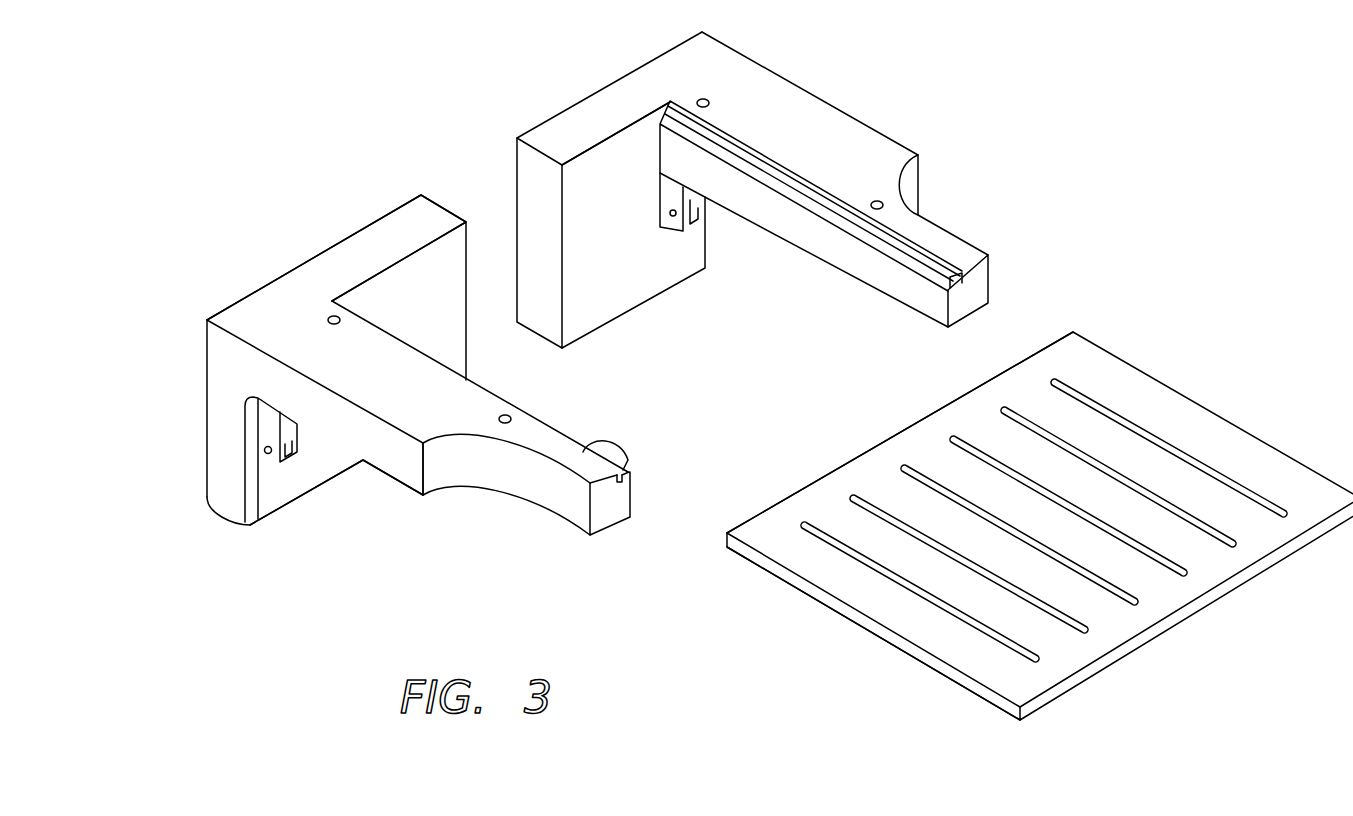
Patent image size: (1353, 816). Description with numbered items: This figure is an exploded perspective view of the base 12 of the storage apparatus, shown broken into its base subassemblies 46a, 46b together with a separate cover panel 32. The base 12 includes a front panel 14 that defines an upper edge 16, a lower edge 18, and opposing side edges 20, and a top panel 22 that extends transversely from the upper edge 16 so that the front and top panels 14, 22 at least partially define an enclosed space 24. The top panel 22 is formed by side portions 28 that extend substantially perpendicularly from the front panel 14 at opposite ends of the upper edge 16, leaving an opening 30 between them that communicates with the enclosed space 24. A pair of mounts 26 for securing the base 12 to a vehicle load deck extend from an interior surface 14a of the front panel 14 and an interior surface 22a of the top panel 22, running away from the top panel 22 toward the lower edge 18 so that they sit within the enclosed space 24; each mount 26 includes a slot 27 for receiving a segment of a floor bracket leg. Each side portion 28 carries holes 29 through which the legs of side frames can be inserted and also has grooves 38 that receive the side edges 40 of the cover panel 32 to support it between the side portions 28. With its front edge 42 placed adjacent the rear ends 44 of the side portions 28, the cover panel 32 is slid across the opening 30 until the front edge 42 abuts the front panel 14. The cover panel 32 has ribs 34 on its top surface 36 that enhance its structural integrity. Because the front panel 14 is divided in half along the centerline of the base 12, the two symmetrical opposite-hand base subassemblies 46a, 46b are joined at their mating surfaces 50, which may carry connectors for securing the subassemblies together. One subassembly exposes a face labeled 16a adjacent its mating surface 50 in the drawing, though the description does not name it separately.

The base 12 is at (738, 383).
The front panel 14 is at (624, 320).
The interior surface of the front panel 14a is at (320, 467).
The upper edge 16 is at (255, 305).
The side face of second bracket block 16a is at (622, 285).
The lower edge 18 is at (297, 505).
The side edges 20 is at (220, 397).
The top panel 22 is at (787, 100).
The interior surface of the top panel 22a is at (266, 443).
The enclosed space 24 is at (373, 520).
The mounts 26 is at (268, 440).
The slot 27 is at (292, 460).
The side portions 28 is at (531, 480).
The holes 29 is at (328, 318).
The opening 30 is at (491, 389).
The cover panel 32 is at (907, 582).
The ribs 34 is at (950, 668).
The top surface 36 is at (1126, 615).
The grooves 38 is at (580, 457).
The side edges of the cover panel 40 is at (1202, 404).
The front edge 42 is at (866, 449).
The rear ends 44 is at (606, 510).
The base subassembly 46a is at (356, 243).
The base subassembly 46b is at (593, 108).
The mating surfaces 50 is at (527, 170).